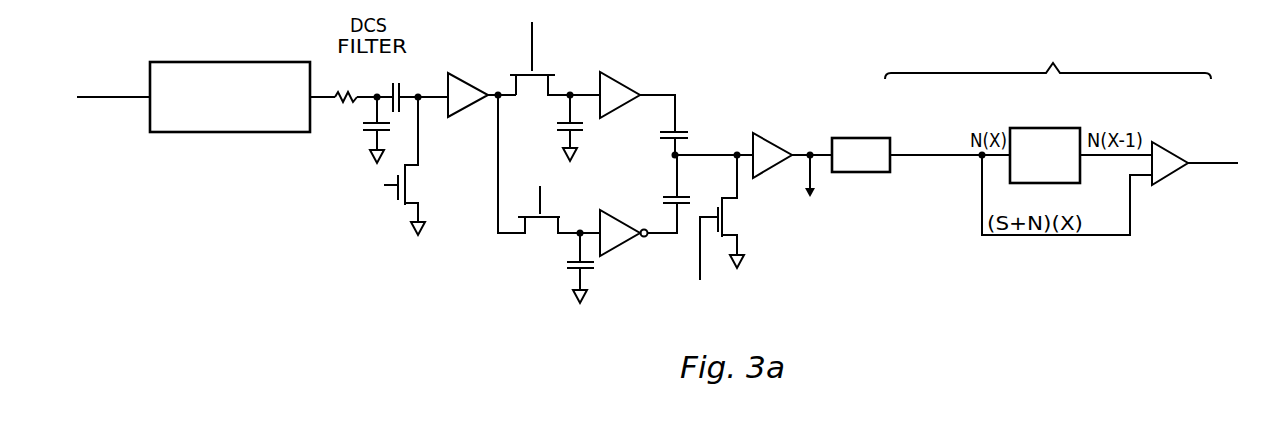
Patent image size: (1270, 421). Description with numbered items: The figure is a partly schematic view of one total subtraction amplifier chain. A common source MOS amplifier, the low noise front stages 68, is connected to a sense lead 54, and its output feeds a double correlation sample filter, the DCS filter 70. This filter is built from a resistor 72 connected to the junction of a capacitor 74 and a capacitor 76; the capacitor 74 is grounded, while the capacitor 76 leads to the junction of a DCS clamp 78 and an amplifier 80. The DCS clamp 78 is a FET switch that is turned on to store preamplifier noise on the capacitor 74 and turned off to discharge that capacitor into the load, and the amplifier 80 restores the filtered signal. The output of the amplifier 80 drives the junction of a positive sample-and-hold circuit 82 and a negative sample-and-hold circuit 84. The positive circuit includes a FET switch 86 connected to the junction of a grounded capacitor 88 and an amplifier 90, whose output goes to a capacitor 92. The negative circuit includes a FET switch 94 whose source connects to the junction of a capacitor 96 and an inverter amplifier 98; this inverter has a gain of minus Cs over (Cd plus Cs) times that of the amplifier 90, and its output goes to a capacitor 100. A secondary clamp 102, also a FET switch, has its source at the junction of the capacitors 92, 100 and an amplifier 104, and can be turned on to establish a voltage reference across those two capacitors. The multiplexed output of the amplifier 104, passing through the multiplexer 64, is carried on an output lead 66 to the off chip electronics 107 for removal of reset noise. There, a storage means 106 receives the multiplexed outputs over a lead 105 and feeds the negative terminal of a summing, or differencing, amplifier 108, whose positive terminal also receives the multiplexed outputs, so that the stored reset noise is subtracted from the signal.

The sense lead 54 is at (146, 96).
The low noise front stages 68 is at (228, 62).
The double correlation sample filter 70 is at (381, 91).
The resistor 72 is at (349, 101).
The capacitor 74 is at (362, 128).
The capacitor 76 is at (402, 84).
The DCS clamp 78 is at (410, 196).
The amplifier 80 is at (466, 84).
The positive sample-and-hold circuit 82 is at (551, 65).
The FET switch 86 is at (519, 72).
The capacitor 88 is at (557, 124).
The amplifier 90 is at (624, 82).
The capacitor 92 is at (662, 134).
The FET switch 94 is at (532, 215).
The negative sample-and-hold circuit 84 is at (563, 208).
The capacitor 96 is at (568, 267).
The inverter amplifier 98 is at (616, 240).
The capacitor 100 is at (663, 199).
The secondary clamp 102 is at (730, 232).
The amplifier 104 is at (775, 141).
The output lead 66 is at (805, 178).
The multiplexer 64 is at (880, 165).
The lead 105 is at (951, 120).
The storage means 106 is at (1043, 135).
The off chip electronics 107 is at (1048, 48).
The summing (differencing) amplifier 108 is at (1170, 150).